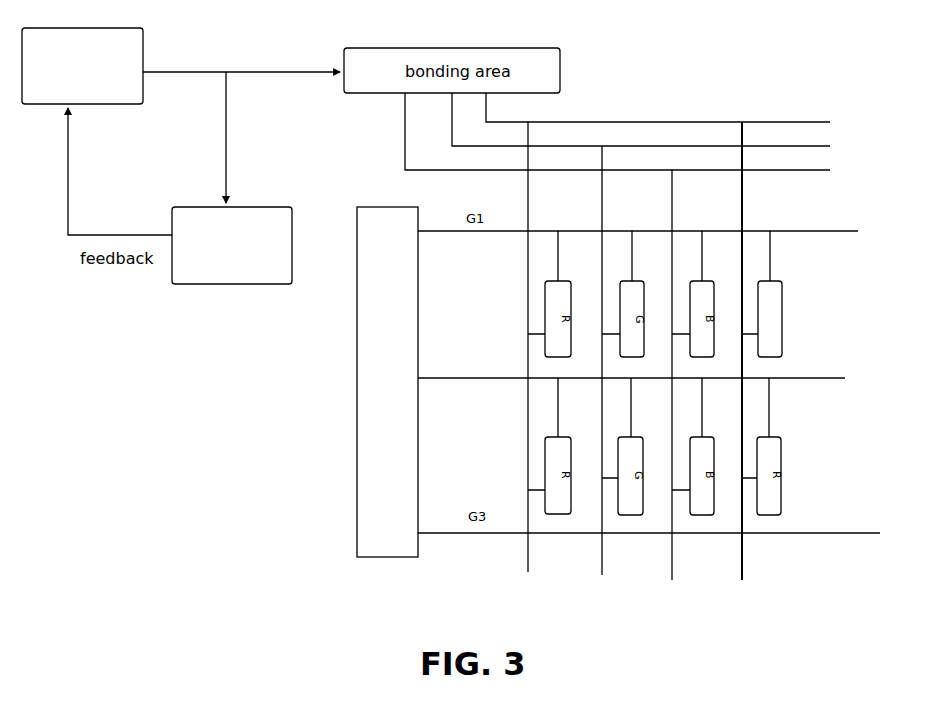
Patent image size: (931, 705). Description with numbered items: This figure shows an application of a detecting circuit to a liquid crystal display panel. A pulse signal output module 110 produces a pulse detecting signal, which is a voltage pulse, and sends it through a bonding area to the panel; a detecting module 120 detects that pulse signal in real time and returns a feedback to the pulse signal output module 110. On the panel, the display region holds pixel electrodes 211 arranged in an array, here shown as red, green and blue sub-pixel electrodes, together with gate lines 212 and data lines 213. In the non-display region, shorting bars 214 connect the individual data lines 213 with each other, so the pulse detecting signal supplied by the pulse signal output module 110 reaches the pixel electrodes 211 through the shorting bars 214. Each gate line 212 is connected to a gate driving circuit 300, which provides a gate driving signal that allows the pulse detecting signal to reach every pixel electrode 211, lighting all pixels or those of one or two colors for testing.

The pulse signal output module 110 is at (130, 46).
The detecting module 120 is at (232, 212).
The pixel electrode 211 is at (783, 290).
The gate line 212 is at (845, 378).
The data line 213 is at (742, 578).
The shorting bar 214 is at (830, 122).
The gate driving circuit 300 is at (400, 553).